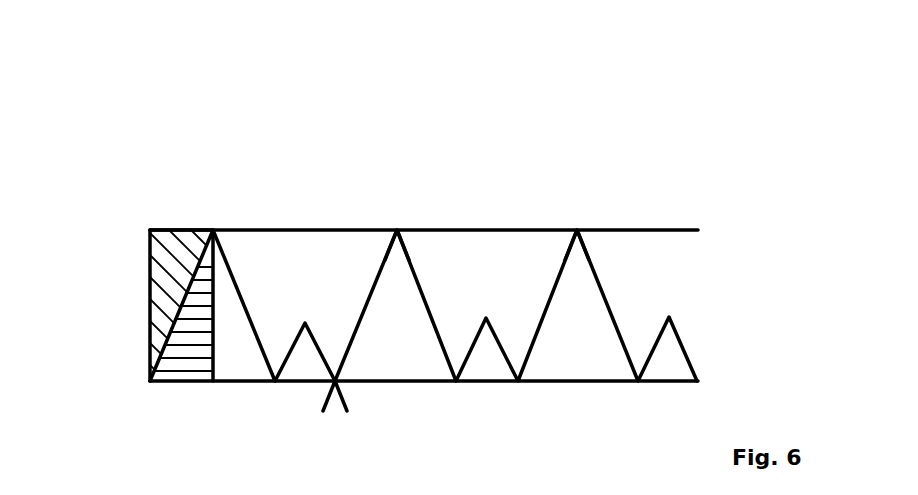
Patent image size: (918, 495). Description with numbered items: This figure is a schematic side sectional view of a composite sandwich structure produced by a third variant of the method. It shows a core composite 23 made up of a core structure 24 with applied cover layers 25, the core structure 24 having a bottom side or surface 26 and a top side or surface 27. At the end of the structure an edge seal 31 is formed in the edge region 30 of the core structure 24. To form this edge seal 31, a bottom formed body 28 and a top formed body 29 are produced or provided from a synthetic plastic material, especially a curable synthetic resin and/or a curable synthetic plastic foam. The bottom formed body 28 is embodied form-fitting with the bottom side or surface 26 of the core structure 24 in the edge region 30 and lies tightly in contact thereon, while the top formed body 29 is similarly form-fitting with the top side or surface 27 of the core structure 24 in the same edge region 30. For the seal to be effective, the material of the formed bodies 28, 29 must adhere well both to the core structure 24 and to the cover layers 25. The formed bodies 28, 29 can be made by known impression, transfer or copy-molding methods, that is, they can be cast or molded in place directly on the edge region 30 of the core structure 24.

The core composite 23 is at (442, 117).
The core structure 24 is at (683, 340).
The cover layers 25 is at (655, 230).
The bottom side or surface 26 is at (250, 348).
The top side or surface 27 is at (252, 268).
The bottom formed body 28 is at (190, 367).
The top formed body 29 is at (170, 245).
The edge region 30 is at (212, 167).
The edge seal 31 is at (138, 305).